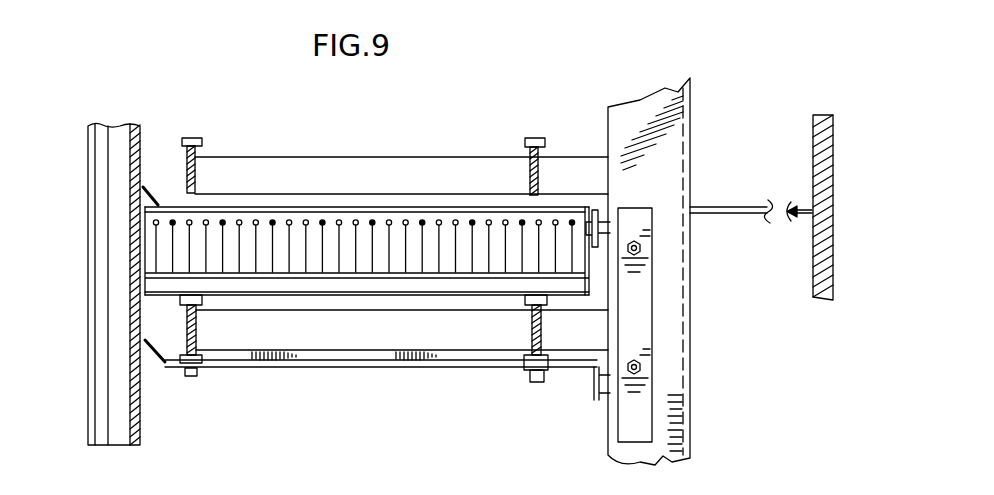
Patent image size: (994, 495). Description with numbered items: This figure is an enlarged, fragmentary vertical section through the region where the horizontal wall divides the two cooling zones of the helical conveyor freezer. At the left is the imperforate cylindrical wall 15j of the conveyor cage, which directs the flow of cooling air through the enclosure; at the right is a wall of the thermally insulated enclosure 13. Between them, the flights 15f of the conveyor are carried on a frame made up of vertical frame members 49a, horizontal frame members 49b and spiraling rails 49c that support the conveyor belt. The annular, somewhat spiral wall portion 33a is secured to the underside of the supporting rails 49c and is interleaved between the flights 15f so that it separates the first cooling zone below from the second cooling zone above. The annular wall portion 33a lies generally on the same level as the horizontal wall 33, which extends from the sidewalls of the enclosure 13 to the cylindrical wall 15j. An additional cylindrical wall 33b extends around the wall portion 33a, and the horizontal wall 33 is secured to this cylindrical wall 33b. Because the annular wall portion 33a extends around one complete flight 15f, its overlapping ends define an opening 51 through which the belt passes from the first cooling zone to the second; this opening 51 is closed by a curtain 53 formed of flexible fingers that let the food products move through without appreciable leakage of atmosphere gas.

The imperforate cylindrical wall 15j is at (142, 160).
The spiraling rails 49c is at (197, 168).
The horizontal frame members 49b is at (412, 133).
The annular wall portion 33a is at (268, 202).
The curtain 53 is at (160, 250).
The opening 51 is at (436, 214).
The flights 15f is at (371, 308).
The vertical frame members 49a is at (697, 170).
The cylindrical wall 33b is at (655, 328).
The horizontal wall 33 is at (738, 213).
The thermally insulated enclosure 13 is at (828, 300).